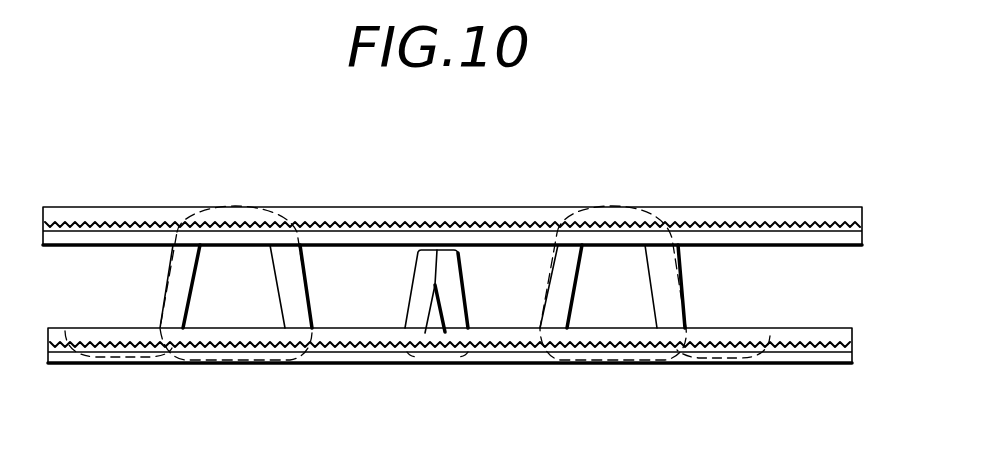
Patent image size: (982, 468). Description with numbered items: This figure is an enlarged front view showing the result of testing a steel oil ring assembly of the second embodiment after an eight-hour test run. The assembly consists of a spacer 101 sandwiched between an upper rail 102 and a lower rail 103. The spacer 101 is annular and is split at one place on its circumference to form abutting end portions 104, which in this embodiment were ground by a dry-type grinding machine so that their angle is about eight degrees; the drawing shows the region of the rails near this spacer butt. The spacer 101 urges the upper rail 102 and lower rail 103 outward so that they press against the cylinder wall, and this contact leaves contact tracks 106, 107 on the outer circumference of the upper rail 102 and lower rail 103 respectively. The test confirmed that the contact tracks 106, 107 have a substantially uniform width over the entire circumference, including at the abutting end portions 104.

The spacer 101 is at (670, 282).
The upper rail 102 is at (112, 207).
The lower rail 103 is at (162, 363).
The abutting end portions 104 is at (437, 250).
The contact track 106 is at (772, 223).
The contact track 107 is at (800, 348).